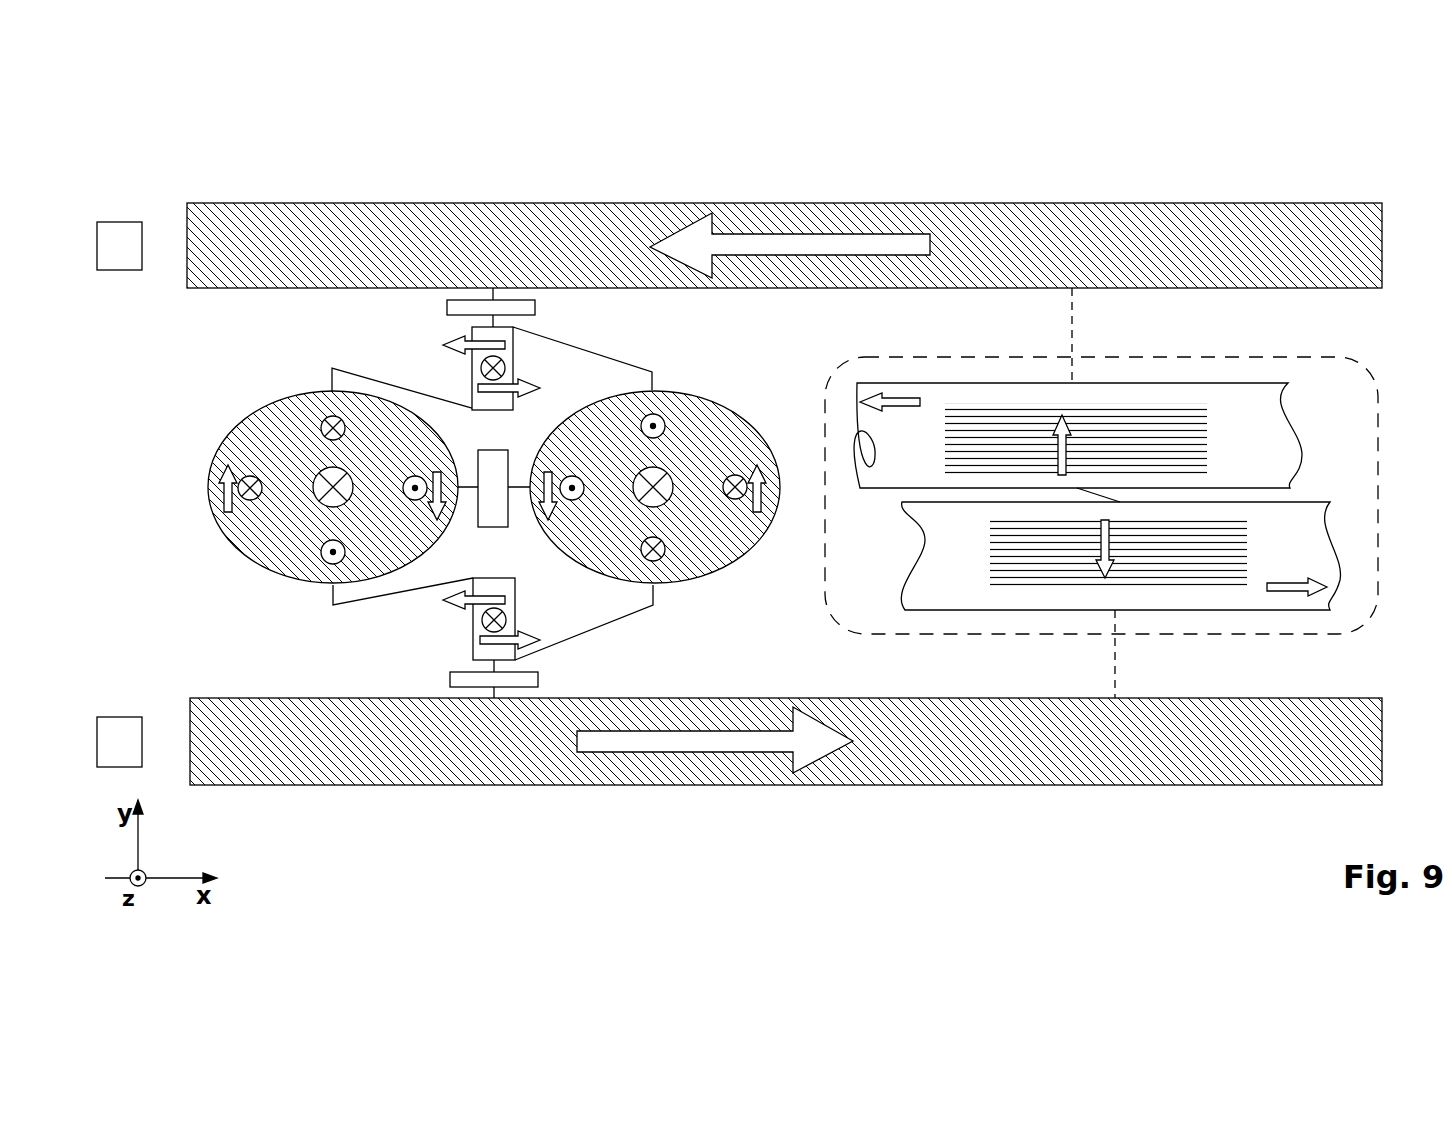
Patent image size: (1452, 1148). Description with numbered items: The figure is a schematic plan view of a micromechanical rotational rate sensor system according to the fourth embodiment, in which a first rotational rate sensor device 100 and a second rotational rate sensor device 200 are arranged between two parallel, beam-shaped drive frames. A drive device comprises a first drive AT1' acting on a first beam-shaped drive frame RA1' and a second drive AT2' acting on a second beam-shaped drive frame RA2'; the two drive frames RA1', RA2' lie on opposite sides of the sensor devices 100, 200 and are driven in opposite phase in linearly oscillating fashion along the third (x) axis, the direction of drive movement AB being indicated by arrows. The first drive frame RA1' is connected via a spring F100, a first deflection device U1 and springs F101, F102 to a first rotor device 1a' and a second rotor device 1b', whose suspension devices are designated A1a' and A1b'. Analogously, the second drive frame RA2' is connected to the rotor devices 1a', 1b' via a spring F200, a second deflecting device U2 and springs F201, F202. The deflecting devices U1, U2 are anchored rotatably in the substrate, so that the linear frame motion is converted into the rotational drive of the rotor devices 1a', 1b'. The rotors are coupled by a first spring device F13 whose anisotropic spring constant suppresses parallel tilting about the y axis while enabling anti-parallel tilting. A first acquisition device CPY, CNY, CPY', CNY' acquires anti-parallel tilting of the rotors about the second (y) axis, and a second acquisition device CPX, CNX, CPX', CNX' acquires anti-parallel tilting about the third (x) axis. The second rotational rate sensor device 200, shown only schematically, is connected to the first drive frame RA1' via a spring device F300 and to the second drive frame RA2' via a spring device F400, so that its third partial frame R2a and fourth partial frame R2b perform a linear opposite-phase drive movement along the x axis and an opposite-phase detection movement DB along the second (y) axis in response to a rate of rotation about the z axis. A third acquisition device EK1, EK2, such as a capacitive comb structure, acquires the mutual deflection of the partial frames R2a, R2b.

The first rotational rate sensor device 100 is at (630, 152).
The second rotational rate sensor device 200 is at (1372, 355).
The first beam-shaped drive frame RA1' is at (784, 218).
The second beam-shaped drive frame RA2' is at (786, 771).
The direction of drive movement AB is at (815, 243).
The first drive AT1' is at (118, 212).
The second drive AT2' is at (122, 710).
The spring F100 is at (535, 308).
The spring F200 is at (538, 679).
The spring F101 is at (354, 374).
The spring F102 is at (618, 364).
The spring F201 is at (427, 582).
The spring F202 is at (577, 637).
The first deflection device U1 is at (448, 354).
The second deflecting device U2 is at (450, 628).
The first spring device F13 is at (511, 450).
The first rotor device 1a' is at (333, 503).
The second rotor device 1b' is at (655, 503).
The suspension device A1a' is at (261, 528).
The suspension device A1b' is at (728, 525).
The first acquisition device electrode CNY is at (359, 428).
The second acquisition device electrode CPX is at (251, 482).
The second acquisition device electrode CNX is at (416, 486).
The first acquisition device electrode CPY is at (358, 552).
The first acquisition device electrode CNY' is at (682, 426).
The second acquisition device electrode CPX' is at (573, 486).
The second acquisition device electrode CNX' is at (734, 482).
The first acquisition device electrode CPY' is at (680, 549).
The spring device F300 is at (1072, 312).
The spring device F400 is at (1113, 678).
The direction of detection movement DB is at (1058, 455).
The third acquisition device EK1 is at (1153, 427).
The third acquisition device EK2 is at (1172, 565).
The third partial frame R2a is at (1242, 403).
The fourth partial frame R2b is at (1300, 540).